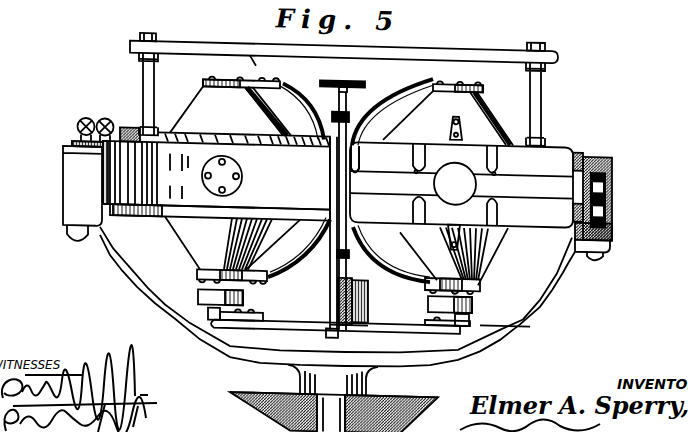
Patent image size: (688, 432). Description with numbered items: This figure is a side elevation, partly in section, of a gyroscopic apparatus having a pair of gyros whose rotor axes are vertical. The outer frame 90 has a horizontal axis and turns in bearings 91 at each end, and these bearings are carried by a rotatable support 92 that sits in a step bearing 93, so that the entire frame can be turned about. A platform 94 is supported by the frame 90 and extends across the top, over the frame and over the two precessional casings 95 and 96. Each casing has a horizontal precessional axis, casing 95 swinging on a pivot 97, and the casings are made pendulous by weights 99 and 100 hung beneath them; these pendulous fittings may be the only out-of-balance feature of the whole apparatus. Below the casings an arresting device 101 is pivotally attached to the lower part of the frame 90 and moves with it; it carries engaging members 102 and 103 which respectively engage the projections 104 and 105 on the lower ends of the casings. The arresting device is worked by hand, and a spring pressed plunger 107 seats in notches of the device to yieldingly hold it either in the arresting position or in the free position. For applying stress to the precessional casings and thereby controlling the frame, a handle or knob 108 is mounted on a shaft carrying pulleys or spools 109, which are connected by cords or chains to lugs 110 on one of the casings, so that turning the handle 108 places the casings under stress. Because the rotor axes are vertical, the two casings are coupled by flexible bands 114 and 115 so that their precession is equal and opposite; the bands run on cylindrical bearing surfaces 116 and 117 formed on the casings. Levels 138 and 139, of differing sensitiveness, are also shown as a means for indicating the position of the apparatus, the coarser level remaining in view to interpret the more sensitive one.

The outer frame 90 is at (162, 200).
The bearings 91 is at (72, 198).
The rotatable support 92 is at (512, 322).
The step bearing 93 is at (333, 411).
The platform 94 is at (480, 52).
The precessional casing 95 is at (230, 106).
The precessional casing 96 is at (483, 114).
The pivot 97 is at (240, 172).
The weight 99 is at (205, 298).
The weight 100 is at (473, 300).
The arresting device 101 is at (317, 327).
The engaging member 102 is at (217, 313).
The engaging member 103 is at (463, 317).
The projection 104 is at (240, 312).
The projection 105 is at (515, 318).
The spring pressed plunger 107 is at (360, 330).
The handle or knob 108 is at (327, 80).
The pulleys or spools 109 is at (348, 110).
The lugs 110 is at (460, 124).
The flexible band 114 is at (383, 96).
The flexible band 115 is at (252, 63).
The cylindrical bearing surface 116 is at (363, 136).
The cylindrical bearing surface 117 is at (302, 98).
The level 138 is at (99, 125).
The level 139 is at (78, 133).